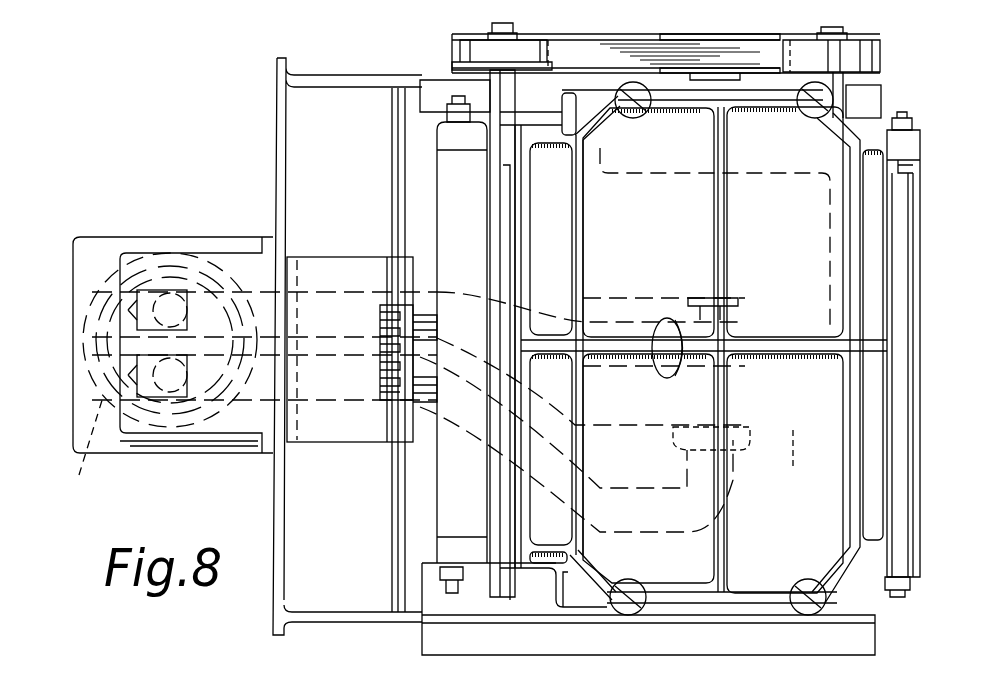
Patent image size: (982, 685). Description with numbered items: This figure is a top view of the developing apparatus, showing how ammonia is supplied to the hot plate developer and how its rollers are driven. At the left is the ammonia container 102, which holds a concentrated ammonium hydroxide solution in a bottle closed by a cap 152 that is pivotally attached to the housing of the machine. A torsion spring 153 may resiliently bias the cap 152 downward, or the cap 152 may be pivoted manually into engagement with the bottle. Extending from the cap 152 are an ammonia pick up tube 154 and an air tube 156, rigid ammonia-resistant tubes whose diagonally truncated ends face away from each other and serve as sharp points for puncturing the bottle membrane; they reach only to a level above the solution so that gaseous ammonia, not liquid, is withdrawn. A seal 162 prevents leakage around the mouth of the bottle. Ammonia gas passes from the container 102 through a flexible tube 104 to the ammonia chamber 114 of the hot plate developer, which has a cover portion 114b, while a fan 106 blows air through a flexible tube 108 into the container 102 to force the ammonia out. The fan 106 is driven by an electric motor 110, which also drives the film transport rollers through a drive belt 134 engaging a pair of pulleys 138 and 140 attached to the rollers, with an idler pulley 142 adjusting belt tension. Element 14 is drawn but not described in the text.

The mounting plate 14 is at (266, 122).
The ammonia container 102 is at (178, 226).
The flexible tube 104 is at (422, 302).
The fan 106 is at (796, 462).
The flexible tube 108 is at (432, 428).
The electric motor 110 is at (746, 178).
The ammonia chamber 114 is at (868, 110).
The cover portion 114b is at (706, 258).
The drive belt 134 is at (594, 44).
The pulley 138 is at (462, 36).
The pulley 140 is at (878, 68).
The idler pulley 142 is at (734, 38).
The cap 152 is at (110, 444).
The torsion spring 153 is at (388, 303).
The ammonia pick up tube 154 is at (141, 282).
The air tube 156 is at (158, 422).
The seal 162 is at (82, 451).